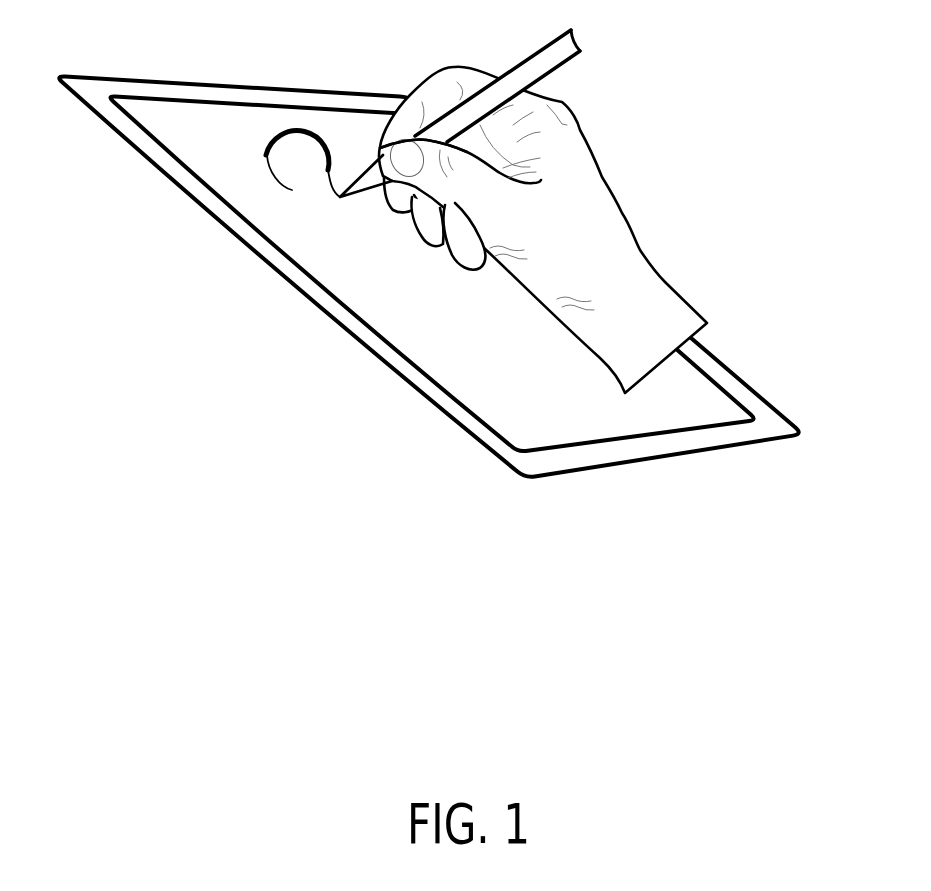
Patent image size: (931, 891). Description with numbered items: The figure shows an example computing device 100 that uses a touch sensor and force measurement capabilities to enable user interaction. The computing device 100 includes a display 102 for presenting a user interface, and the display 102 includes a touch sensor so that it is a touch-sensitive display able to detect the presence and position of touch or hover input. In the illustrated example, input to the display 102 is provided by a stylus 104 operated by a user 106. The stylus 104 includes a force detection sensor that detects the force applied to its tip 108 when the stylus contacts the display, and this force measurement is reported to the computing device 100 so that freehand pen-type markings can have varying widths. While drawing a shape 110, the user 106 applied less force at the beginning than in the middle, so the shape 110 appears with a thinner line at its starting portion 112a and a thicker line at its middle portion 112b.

The computing device 100 is at (126, 77).
The display 102 is at (141, 121).
The stylus 104 is at (570, 32).
The user 106 is at (600, 188).
The tip 108 is at (347, 207).
The shape 110 is at (268, 129).
The starting portion 112a is at (269, 175).
The middle portion 112b is at (295, 137).